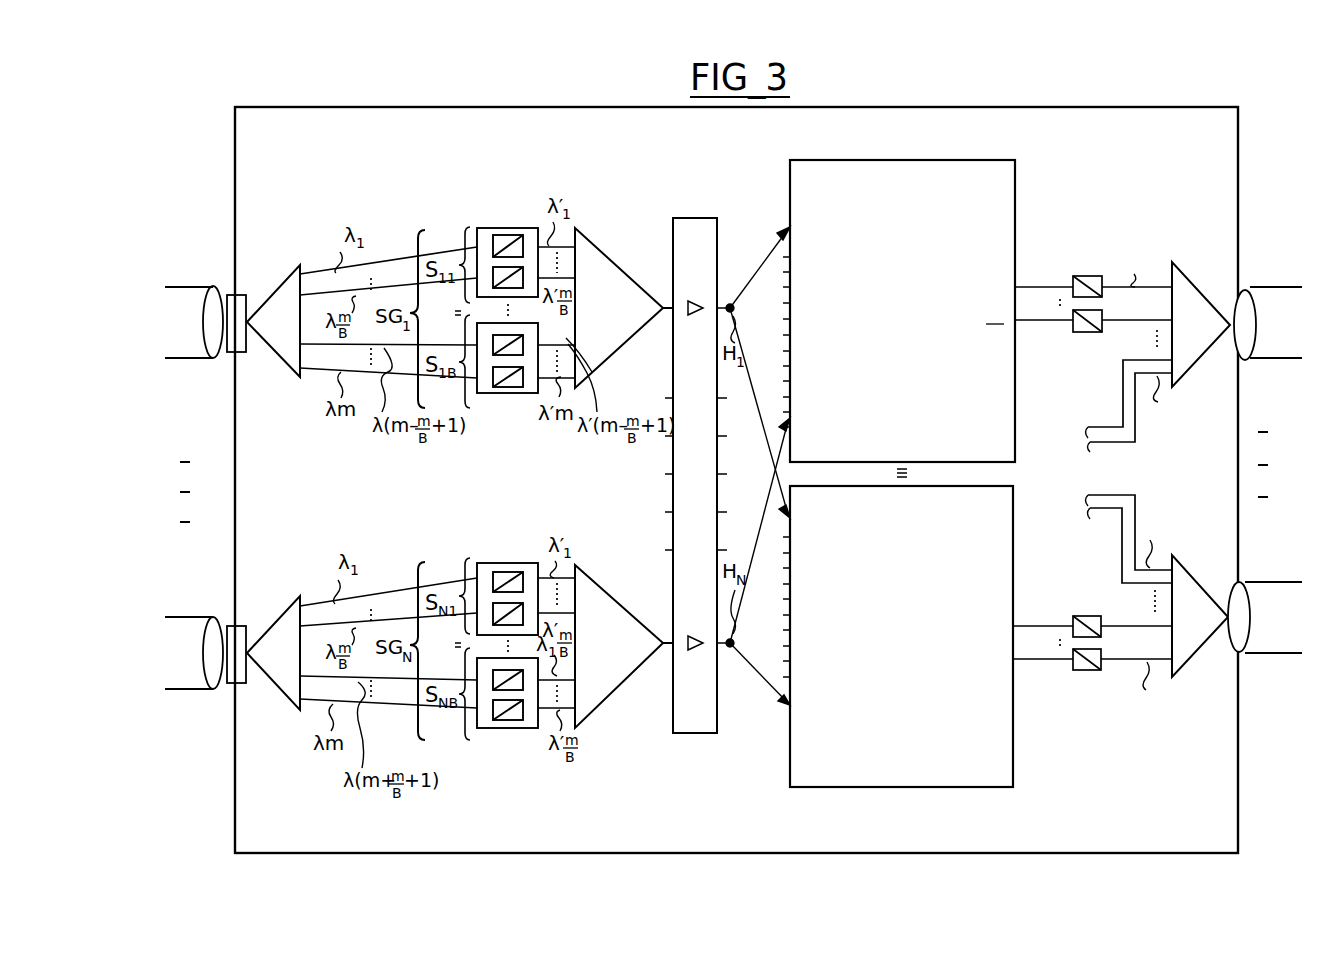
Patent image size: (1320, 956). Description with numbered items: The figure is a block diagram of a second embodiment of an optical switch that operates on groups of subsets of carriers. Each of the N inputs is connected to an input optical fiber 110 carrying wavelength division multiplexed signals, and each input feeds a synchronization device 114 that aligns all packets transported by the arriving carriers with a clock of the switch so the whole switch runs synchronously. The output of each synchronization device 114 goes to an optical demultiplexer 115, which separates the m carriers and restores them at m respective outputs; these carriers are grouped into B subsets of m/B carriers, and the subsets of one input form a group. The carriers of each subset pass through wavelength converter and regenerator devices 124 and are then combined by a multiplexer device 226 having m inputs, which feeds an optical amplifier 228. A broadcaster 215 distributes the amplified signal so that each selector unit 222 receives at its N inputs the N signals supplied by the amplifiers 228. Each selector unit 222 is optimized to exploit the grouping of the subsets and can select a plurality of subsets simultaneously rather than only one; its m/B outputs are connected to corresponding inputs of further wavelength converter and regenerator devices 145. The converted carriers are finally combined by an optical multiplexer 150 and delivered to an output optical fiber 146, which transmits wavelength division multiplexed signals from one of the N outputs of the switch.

The input optical fiber 110 is at (183, 284).
The synchronization device 114 is at (210, 728).
The optical demultiplexer 115 is at (278, 284).
The wavelength converter and regenerator device 124 is at (510, 228).
The multiplexer device 226 is at (618, 268).
The optical amplifier 228 is at (693, 218).
The broadcaster 215 is at (735, 294).
The selector unit 222 is at (1015, 172).
The wavelength converter and regenerator device 145 is at (1088, 276).
The optical multiplexer 150 is at (1199, 684).
The output optical fiber 146 is at (1272, 285).